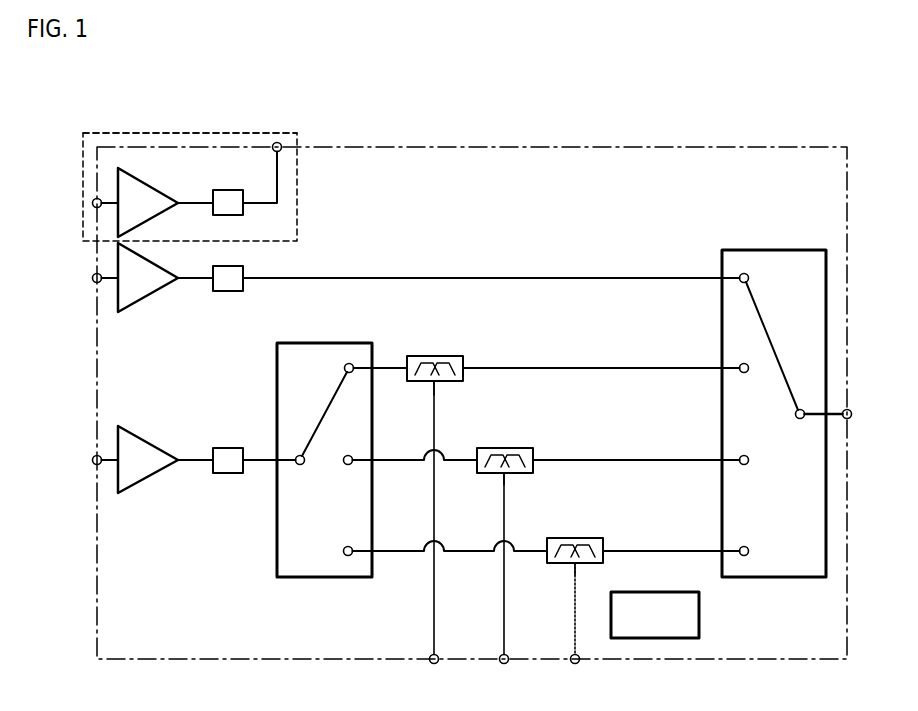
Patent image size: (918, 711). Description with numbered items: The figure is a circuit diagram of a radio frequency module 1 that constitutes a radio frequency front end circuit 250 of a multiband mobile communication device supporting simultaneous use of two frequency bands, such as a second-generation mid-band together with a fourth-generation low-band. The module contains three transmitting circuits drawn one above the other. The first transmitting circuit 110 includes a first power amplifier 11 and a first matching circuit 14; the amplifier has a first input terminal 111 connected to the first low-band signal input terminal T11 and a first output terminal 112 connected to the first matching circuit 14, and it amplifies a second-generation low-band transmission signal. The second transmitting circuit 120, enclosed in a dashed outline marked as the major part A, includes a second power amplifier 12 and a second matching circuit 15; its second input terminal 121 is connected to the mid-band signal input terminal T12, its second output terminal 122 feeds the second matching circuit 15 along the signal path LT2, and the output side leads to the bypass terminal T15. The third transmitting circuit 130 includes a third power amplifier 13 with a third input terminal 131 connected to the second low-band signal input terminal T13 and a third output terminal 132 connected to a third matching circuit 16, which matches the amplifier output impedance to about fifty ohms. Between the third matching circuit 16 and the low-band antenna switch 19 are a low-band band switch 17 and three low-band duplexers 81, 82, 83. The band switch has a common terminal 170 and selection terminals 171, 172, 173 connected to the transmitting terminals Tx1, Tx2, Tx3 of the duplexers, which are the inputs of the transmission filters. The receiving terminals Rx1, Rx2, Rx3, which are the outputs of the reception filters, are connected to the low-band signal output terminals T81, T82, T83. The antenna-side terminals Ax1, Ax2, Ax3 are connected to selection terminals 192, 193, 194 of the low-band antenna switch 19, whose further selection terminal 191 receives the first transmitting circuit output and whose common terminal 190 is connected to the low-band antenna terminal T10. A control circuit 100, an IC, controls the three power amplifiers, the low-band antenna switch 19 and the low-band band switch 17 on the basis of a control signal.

The radio frequency module 1 is at (217, 147).
The radio frequency front end circuit 250 is at (558, 147).
The major part A is at (296, 205).
The first power amplifier 11 is at (136, 297).
The second power amplifier 12 is at (152, 208).
The third power amplifier 13 is at (147, 443).
The first input terminal 111 is at (111, 283).
The second input terminal 121 is at (100, 148).
The third input terminal 131 is at (111, 467).
The first output terminal 112 is at (178, 283).
The second output terminal 122 is at (178, 198).
The third output terminal 132 is at (178, 465).
The first matching circuit 14 is at (228, 292).
The second matching circuit 15 is at (237, 197).
The third matching circuit 16 is at (228, 448).
The first transmitting circuit 110 is at (398, 307).
The second transmitting circuit 120 is at (182, 186).
The third transmitting circuit 130 is at (172, 460).
The signal path LT2 is at (194, 198).
The low-band band switch 17 is at (313, 442).
The common terminal of low-band band switch 170 is at (300, 465).
The selection terminal 171 is at (352, 363).
The selection terminal 172 is at (348, 455).
The selection terminal 173 is at (343, 551).
The low-band antenna switch 19 is at (770, 392).
The common terminal 190 is at (800, 419).
The selection terminal 191 is at (742, 272).
The selection terminal 192 is at (746, 373).
The selection terminal 193 is at (747, 465).
The selection terminal 194 is at (748, 546).
The low-band duplexer 81 is at (435, 362).
The low-band duplexer 82 is at (506, 453).
The low-band duplexer 83 is at (575, 543).
The antenna-side terminal Ax1 is at (468, 362).
The antenna-side terminal Ax2 is at (534, 457).
The antenna-side terminal Ax3 is at (604, 548).
The transmitting terminal Tx1 is at (407, 378).
The transmitting terminal Tx2 is at (477, 463).
The transmitting terminal Tx3 is at (545, 560).
The receiving terminal Rx1 is at (436, 382).
The receiving terminal Rx2 is at (506, 474).
The receiving terminal Rx3 is at (579, 566).
The control circuit 100 is at (692, 615).
The low-band antenna terminal T10 is at (851, 418).
The first low-band signal input terminal T11 is at (95, 283).
The mid-band signal input terminal T12 is at (93, 207).
The second low-band signal input terminal T13 is at (95, 465).
The bypass terminal T15 is at (277, 142).
The low-band signal output terminal T81 is at (433, 664).
The low-band signal output terminal T82 is at (503, 664).
The low-band signal output terminal T83 is at (576, 664).